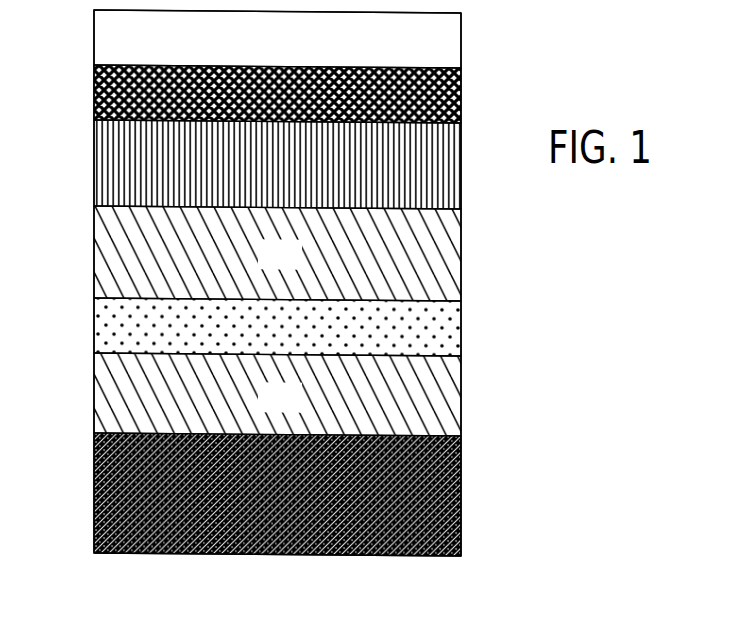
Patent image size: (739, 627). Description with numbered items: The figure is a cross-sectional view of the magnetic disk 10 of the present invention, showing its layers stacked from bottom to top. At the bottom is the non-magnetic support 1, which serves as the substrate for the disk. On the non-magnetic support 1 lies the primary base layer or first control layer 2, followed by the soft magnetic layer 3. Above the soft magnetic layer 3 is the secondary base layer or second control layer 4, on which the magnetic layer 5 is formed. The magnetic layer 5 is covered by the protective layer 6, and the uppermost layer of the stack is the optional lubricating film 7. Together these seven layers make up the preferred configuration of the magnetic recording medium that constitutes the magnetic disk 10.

The non-magnetic support 1 is at (94, 497).
The primary base layer 2 is at (94, 398).
The soft magnetic layer 3 is at (94, 334).
The secondary base layer 4 is at (94, 261).
The magnetic layer 5 is at (94, 165).
The protective layer 6 is at (94, 92).
The lubricating film 7 is at (94, 39).
The magnetic disk 10 is at (494, 342).